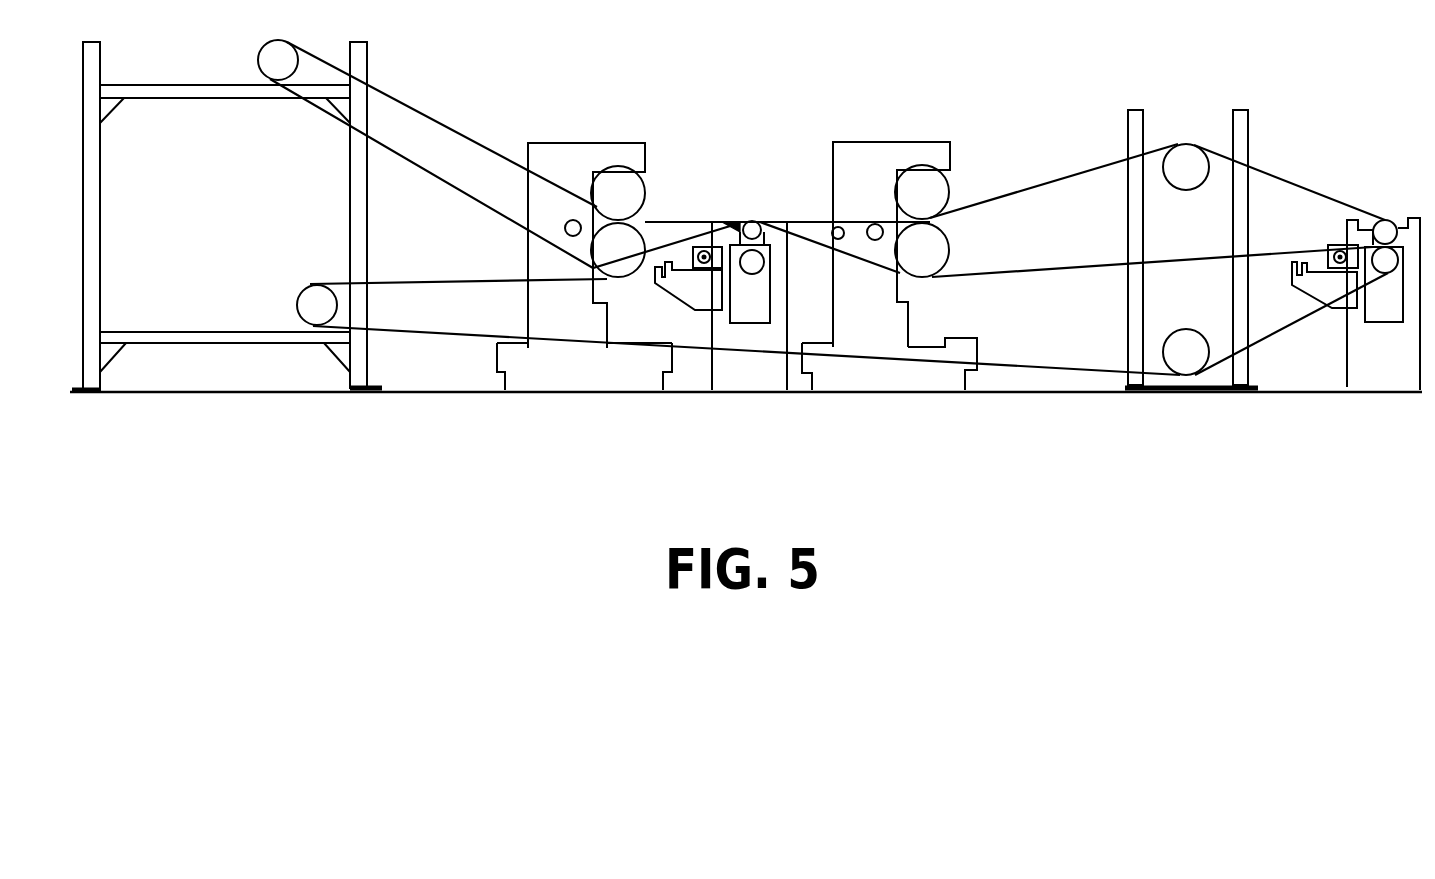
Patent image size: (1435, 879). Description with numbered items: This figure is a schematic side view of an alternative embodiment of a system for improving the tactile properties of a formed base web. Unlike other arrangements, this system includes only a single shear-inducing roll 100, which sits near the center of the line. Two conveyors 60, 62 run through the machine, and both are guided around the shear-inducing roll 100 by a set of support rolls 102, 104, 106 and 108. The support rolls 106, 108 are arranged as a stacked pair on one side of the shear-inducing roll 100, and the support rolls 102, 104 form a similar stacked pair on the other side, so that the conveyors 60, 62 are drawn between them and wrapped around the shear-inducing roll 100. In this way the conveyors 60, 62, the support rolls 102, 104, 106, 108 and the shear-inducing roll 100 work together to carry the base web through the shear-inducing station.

The conveyor 60 is at (1050, 183).
The conveyor 62 is at (1048, 393).
The shear-inducing roll 100 is at (757, 222).
The support roll 102 is at (927, 180).
The support roll 104 is at (940, 253).
The support roll 106 is at (630, 180).
The support roll 108 is at (633, 240).